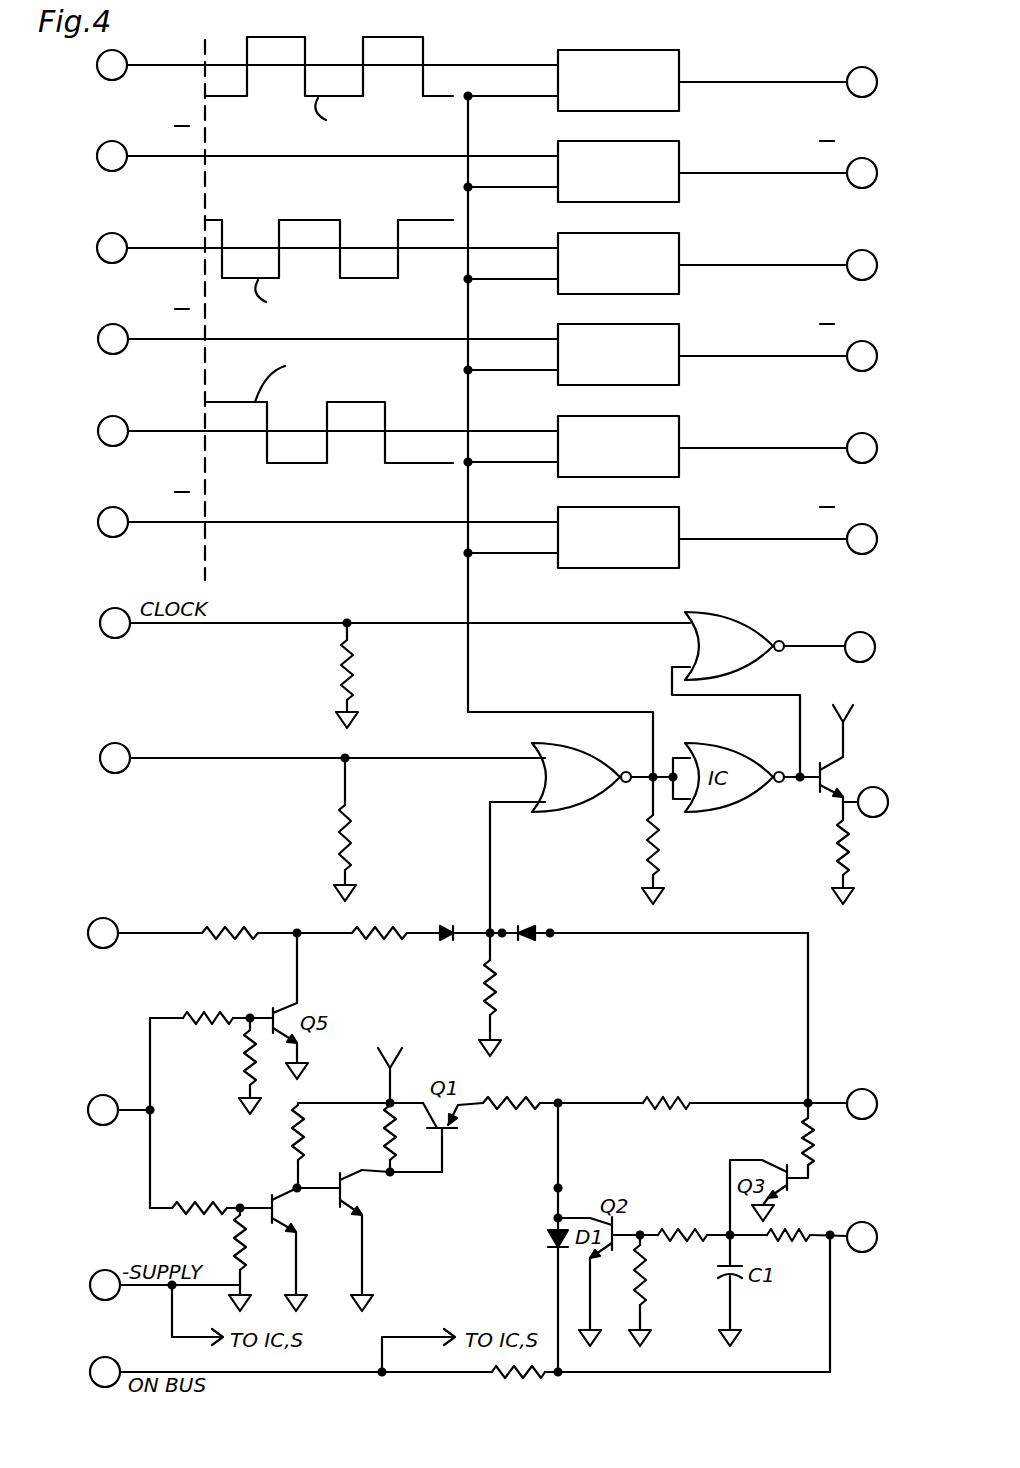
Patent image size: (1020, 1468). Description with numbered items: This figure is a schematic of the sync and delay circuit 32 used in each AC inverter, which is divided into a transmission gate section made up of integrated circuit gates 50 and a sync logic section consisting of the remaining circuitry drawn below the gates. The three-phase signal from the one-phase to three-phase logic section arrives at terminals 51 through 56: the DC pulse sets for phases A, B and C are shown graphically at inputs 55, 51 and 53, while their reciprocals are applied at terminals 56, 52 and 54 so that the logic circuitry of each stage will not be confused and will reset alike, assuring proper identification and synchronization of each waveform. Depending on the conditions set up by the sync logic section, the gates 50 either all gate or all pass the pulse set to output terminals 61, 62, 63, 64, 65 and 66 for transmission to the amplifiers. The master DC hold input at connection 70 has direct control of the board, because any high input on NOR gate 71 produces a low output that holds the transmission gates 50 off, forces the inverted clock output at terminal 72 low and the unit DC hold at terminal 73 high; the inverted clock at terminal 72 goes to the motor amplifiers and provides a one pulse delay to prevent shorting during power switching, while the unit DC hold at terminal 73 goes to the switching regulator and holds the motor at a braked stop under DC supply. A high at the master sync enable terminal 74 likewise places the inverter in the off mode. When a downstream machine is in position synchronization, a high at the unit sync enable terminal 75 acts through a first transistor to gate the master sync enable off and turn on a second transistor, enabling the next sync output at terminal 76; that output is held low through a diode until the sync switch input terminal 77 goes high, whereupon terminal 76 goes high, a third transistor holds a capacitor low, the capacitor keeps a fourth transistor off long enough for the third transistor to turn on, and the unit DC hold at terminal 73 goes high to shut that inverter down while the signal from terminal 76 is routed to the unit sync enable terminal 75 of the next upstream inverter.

The sync and delay circuit 32 is at (368, 556).
The integrated circuit gates 50 is at (679, 50).
The terminal 51 is at (105, 78).
The terminal 52 is at (105, 169).
The terminal 53 is at (105, 261).
The terminal 54 is at (106, 352).
The terminal 55 is at (106, 444).
The terminal 56 is at (106, 535).
The output terminal 61 is at (855, 95).
The output terminal 62 is at (855, 186).
The output terminal 63 is at (855, 278).
The output terminal 64 is at (855, 369).
The output terminal 65 is at (855, 461).
The output terminal 66 is at (855, 552).
The master DC hold input connection 70 is at (105, 772).
The NOR gate 71 is at (597, 750).
The inverted clock output terminal 72 is at (876, 652).
The unit DC hold output terminal 73 is at (873, 817).
The master sync enable terminal 74 is at (98, 947).
The unit sync enable terminal 75 is at (98, 1124).
The next sync output terminal 76 is at (857, 1119).
The sync switch input terminal 77 is at (857, 1251).